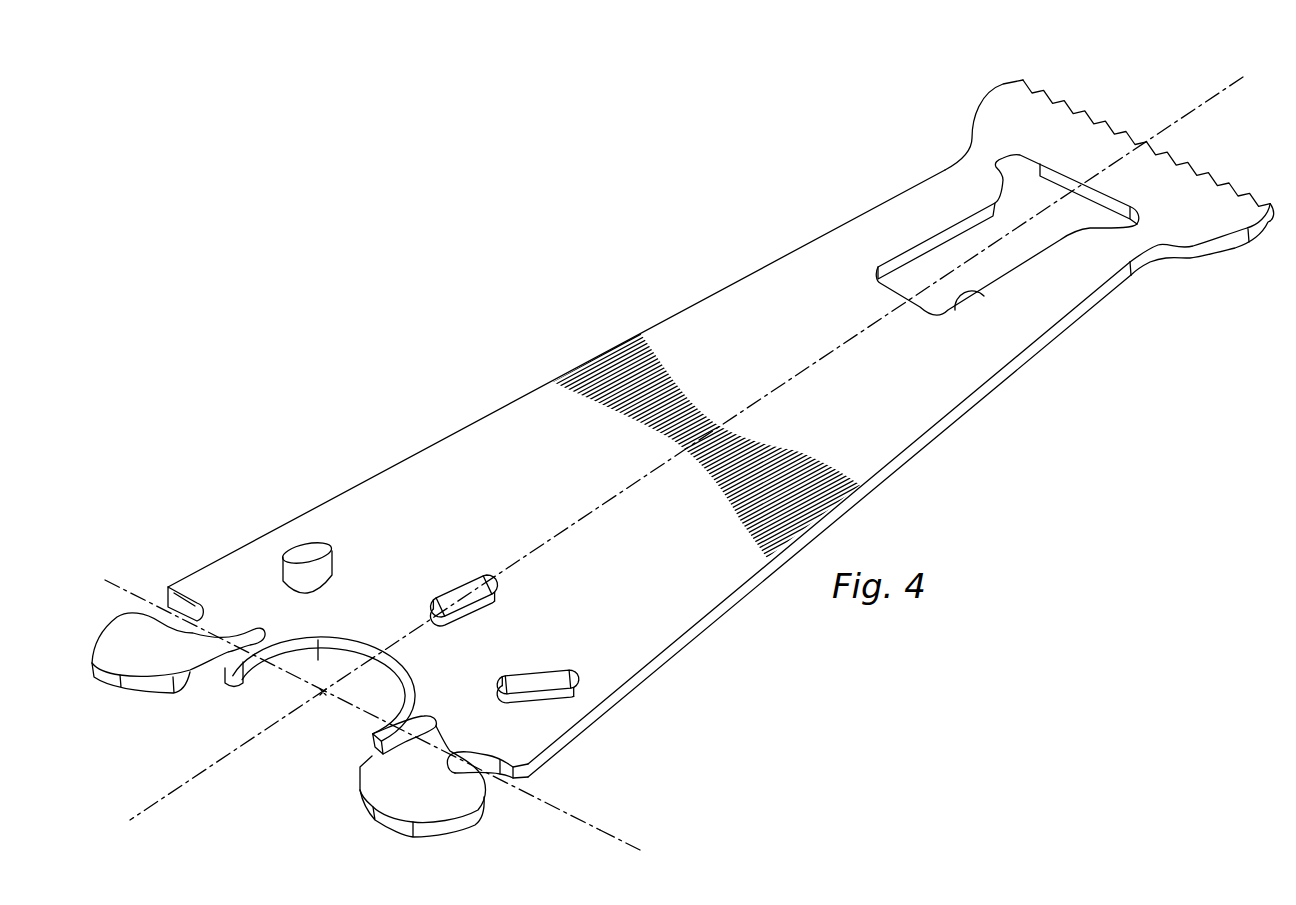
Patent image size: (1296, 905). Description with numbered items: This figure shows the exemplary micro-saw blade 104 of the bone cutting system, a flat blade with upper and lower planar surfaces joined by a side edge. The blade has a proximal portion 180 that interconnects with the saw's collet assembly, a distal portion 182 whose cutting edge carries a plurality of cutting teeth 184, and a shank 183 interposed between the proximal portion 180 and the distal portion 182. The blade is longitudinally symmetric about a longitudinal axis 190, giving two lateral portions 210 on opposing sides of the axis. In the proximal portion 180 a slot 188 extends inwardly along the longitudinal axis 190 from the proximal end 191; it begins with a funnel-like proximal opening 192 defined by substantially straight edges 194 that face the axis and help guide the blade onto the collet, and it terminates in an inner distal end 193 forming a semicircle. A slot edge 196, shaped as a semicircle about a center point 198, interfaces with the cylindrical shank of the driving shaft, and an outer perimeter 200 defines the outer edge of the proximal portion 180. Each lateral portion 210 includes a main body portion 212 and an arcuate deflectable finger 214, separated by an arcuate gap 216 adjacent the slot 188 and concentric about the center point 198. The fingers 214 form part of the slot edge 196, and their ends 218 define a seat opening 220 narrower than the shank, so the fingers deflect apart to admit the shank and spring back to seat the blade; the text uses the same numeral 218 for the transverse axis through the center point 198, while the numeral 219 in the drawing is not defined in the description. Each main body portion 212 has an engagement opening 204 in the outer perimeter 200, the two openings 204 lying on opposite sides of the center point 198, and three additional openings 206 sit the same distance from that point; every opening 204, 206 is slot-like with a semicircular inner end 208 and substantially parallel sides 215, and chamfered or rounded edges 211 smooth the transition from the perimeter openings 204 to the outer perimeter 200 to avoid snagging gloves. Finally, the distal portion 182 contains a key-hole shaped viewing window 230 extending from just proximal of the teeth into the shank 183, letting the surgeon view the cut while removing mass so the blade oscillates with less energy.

The saw blade 104 is at (649, 441).
The proximal portion 180 is at (321, 684).
The distal portion 182 is at (976, 84).
The shank 183 is at (556, 332).
The cutting teeth 184 is at (1083, 103).
The slot 188 is at (258, 678).
The longitudinal axis 190 is at (1230, 86).
The proximal end 191 is at (147, 693).
The funnel-like proximal opening 192 is at (269, 767).
The inner distal end 193 is at (355, 650).
The straight edges 194 is at (360, 800).
The slot edge 196 is at (410, 690).
The center point 198 is at (324, 702).
The outer perimeter 200 is at (640, 678).
The opening 204 is at (164, 608).
The additional openings 206 is at (312, 552).
The semi-circular inner end 208 is at (480, 578).
The lateral portion 210 is at (232, 556).
The chamfered or rounded edges 211 is at (522, 787).
The main body portion 212 is at (118, 640).
The deflectable finger 214 is at (378, 732).
The substantially parallel sides 215 is at (442, 586).
The gap 216 is at (404, 760).
The ends of deflectable fingers 218 is at (372, 748).
The axis end 219 is at (632, 842).
The seat opening 220 is at (318, 668).
The viewing window 230 is at (957, 322).